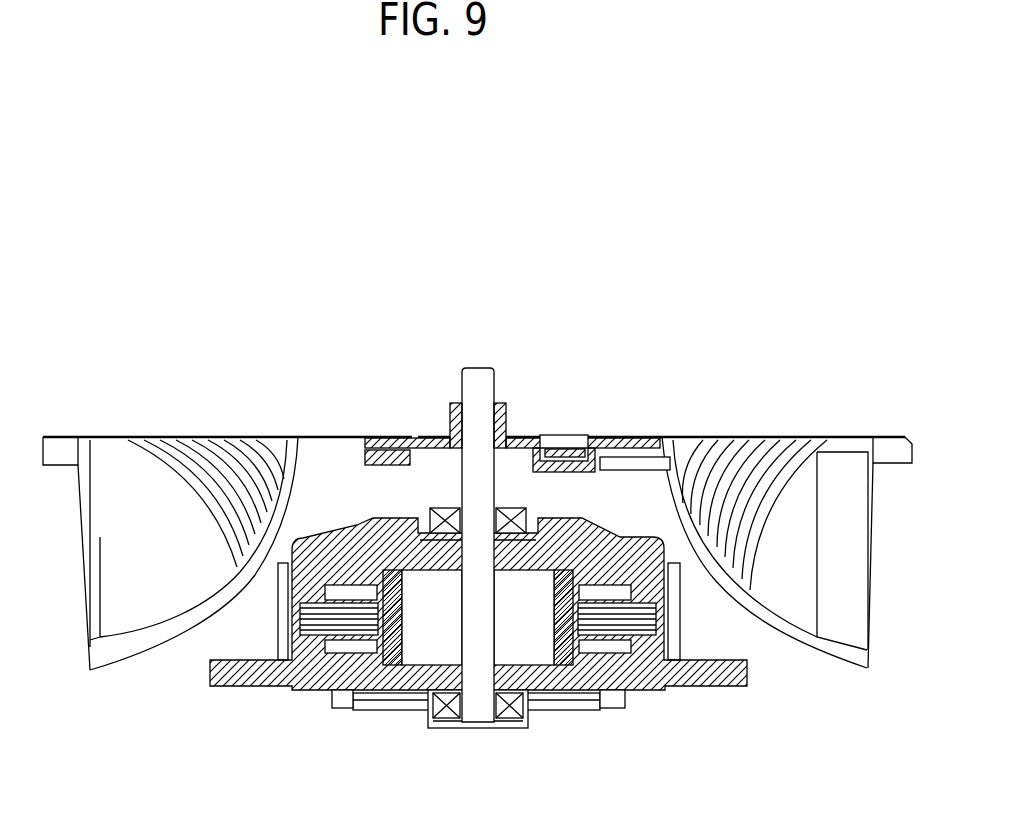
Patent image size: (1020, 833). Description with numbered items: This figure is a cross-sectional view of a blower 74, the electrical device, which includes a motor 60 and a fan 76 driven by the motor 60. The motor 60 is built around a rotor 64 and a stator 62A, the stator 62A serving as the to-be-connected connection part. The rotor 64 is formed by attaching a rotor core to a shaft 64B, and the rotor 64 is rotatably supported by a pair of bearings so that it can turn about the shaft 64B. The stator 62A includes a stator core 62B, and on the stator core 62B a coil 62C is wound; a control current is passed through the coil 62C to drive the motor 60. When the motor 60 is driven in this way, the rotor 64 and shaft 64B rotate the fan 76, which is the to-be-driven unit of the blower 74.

The motor 60 is at (360, 523).
The rotor 64 is at (423, 603).
The shaft 64B is at (472, 390).
The blower 74 is at (577, 422).
The coil 62C is at (602, 588).
The stator core 62B is at (648, 562).
The stator 62A is at (624, 632).
The fan 76 is at (768, 447).